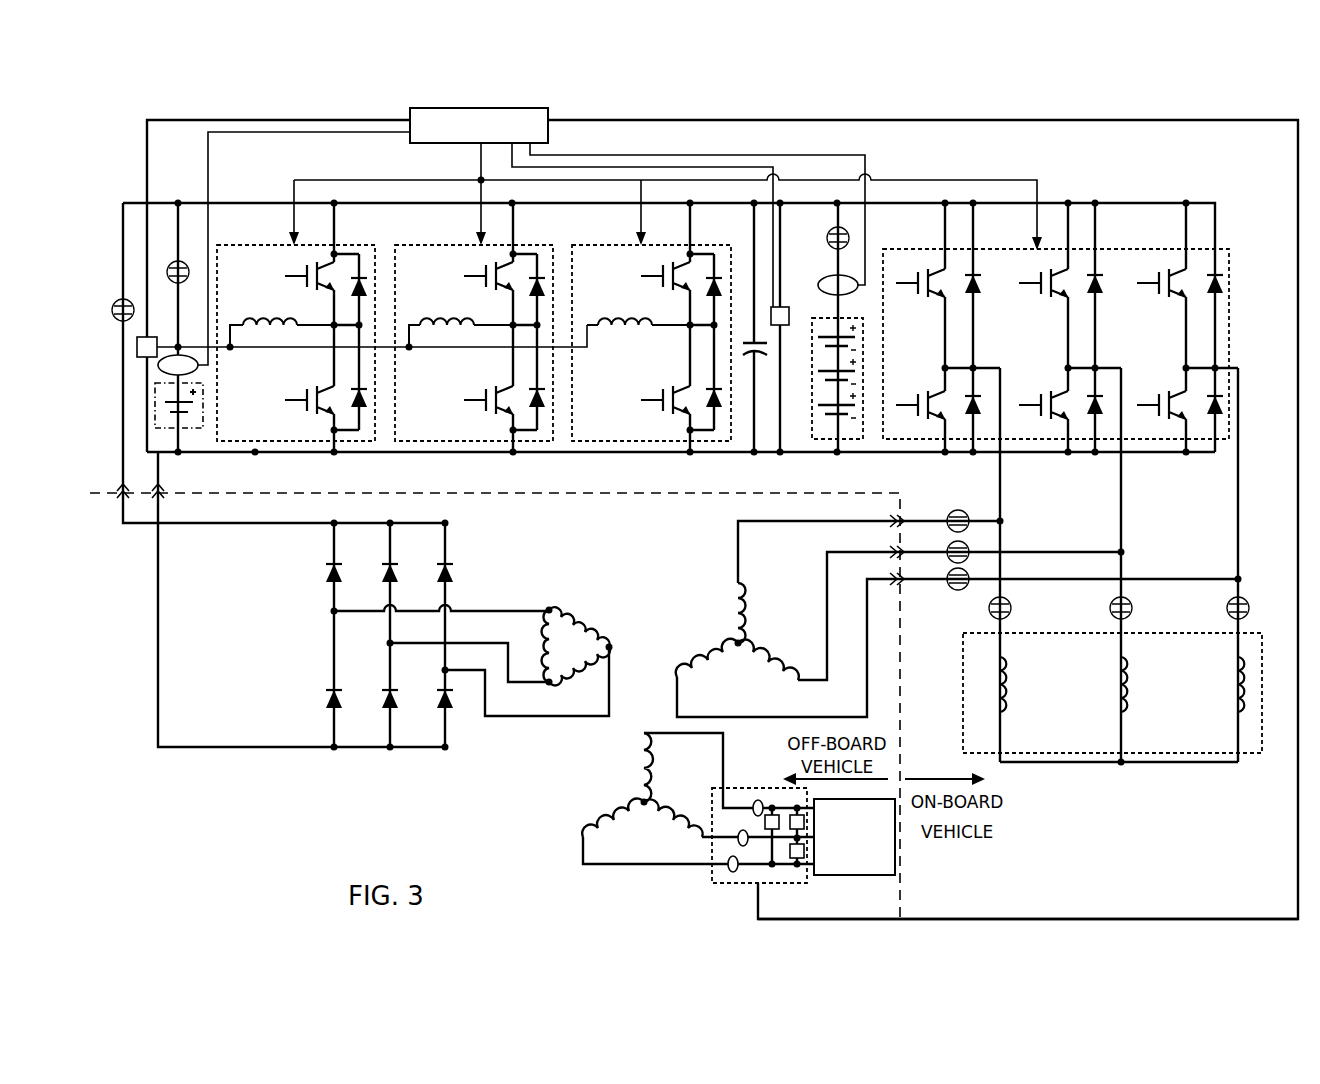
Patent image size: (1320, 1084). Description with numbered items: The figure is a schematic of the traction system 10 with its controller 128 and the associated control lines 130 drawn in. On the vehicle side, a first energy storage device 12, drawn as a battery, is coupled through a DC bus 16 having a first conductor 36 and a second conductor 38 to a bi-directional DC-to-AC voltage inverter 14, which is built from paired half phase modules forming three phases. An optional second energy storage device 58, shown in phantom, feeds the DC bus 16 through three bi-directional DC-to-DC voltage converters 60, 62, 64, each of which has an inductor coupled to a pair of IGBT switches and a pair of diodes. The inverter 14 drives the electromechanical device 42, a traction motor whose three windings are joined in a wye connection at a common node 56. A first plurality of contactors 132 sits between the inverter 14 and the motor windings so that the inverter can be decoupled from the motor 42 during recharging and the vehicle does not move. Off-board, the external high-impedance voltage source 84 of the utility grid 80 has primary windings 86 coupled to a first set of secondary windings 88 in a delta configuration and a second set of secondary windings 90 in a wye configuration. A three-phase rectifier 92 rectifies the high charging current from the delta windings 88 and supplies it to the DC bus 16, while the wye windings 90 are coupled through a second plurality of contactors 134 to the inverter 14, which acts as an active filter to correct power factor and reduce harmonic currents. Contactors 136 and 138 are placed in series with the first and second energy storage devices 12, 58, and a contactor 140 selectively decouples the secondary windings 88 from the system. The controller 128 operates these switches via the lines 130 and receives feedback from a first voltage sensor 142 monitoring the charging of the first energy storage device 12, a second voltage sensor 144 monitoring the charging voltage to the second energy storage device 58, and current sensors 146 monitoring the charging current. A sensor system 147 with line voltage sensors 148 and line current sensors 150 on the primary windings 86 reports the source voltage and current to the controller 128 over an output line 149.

The traction system 10 is at (128, 112).
The controller 128 is at (425, 107).
The control lines 130 is at (478, 160).
The bi-directional DC-to-DC voltage converter 60 is at (282, 240).
The bi-directional DC-to-DC voltage converter 62 is at (460, 240).
The bi-directional DC-to-DC voltage converter 64 is at (637, 240).
The contactor 136 is at (827, 238).
The bi-directional DC-to-AC voltage inverter 14 is at (884, 250).
The DC bus 16 is at (910, 210).
The first conductor 36 is at (1150, 210).
The second conductor 38 is at (1185, 456).
The contactor 138 is at (174, 263).
The contactor 140 is at (116, 303).
The second voltage sensor 144 is at (150, 336).
The current sensor 146 is at (188, 355).
The first energy storage device 12 is at (810, 318).
The first voltage sensor 142 is at (786, 328).
The second energy storage device 58 is at (178, 430).
The second plurality of contactors 134 is at (947, 540).
The first plurality of contactors 132 is at (1012, 600).
The electromechanical device 42 is at (962, 660).
The node 56 is at (1030, 764).
The first set of secondary windings 88 is at (592, 622).
The second set of secondary windings 90 is at (748, 618).
The three-phase rectifier 92 is at (364, 760).
The high-impedance voltage source 84 is at (566, 766).
The primary windings 86 is at (656, 772).
The line voltage sensors 148 is at (784, 806).
The line current sensors 150 is at (730, 855).
The sensor system 147 is at (712, 880).
The output line 149 is at (756, 902).
The utility grid 80 is at (845, 876).